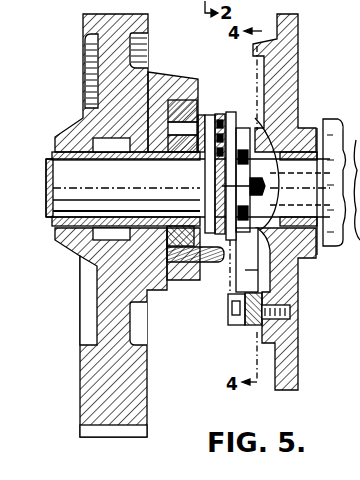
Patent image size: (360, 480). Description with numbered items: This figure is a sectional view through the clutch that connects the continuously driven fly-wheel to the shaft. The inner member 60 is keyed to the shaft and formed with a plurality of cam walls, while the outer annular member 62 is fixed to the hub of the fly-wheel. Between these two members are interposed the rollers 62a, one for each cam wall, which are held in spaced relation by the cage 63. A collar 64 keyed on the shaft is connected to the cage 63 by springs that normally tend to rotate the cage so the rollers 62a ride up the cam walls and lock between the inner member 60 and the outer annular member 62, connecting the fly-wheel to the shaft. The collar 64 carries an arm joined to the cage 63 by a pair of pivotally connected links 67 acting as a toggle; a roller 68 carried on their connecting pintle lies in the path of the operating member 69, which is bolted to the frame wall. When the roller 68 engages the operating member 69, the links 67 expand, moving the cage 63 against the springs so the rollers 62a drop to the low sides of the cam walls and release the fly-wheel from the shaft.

The inner member 60 is at (188, 198).
The outer annular member 62 is at (195, 108).
The rollers 62a is at (170, 112).
The cage 63 is at (204, 263).
The collar 64 is at (232, 118).
The links 67 is at (280, 205).
The roller 68 is at (250, 190).
The operating member 69 is at (236, 328).